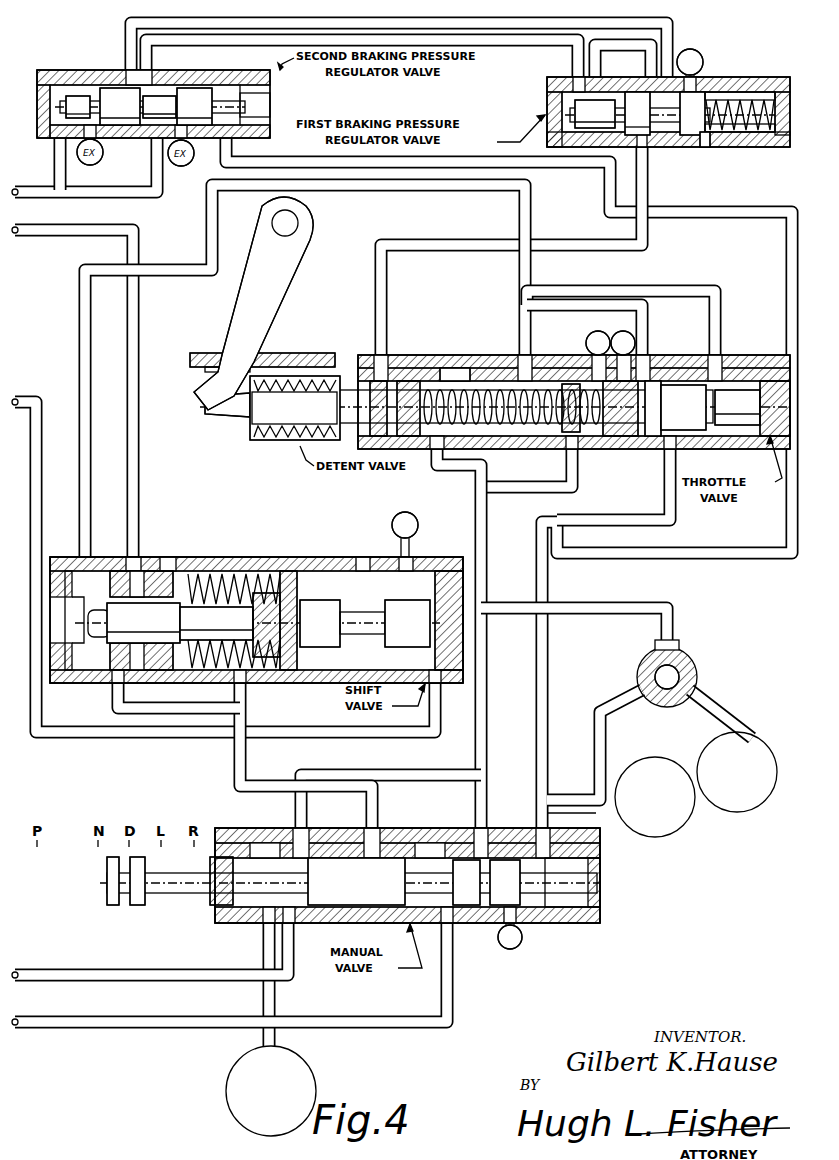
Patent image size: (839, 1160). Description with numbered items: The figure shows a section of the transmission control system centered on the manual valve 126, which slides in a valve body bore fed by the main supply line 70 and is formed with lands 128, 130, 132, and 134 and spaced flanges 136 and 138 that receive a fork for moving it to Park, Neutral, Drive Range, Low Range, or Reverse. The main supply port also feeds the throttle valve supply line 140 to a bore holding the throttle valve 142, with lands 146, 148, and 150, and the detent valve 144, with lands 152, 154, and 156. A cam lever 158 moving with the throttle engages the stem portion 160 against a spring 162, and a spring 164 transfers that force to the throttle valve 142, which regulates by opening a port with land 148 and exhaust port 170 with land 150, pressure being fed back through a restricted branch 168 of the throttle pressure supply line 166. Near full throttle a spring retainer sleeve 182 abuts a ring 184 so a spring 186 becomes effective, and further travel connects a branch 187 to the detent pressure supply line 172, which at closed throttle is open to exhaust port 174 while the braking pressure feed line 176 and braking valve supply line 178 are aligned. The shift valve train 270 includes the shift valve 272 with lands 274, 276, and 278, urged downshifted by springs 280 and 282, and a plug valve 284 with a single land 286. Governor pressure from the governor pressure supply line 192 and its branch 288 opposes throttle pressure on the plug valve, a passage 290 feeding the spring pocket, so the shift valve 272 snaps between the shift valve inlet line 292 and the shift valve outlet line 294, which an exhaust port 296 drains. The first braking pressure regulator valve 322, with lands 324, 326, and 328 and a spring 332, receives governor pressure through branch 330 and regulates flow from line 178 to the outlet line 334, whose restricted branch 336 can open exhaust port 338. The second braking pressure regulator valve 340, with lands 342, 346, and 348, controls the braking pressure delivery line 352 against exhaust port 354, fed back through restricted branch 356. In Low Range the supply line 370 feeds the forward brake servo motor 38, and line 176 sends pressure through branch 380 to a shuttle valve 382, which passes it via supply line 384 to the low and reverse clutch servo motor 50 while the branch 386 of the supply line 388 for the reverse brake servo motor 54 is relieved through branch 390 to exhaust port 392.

The outlet line 334 is at (452, 22).
The restricted branch 336 is at (576, 77).
The small diameter land 342 is at (76, 96).
The land 346 is at (116, 90).
The second braking pressure regulator valve 340 is at (160, 98).
The land 348 is at (196, 92).
The restricted branch 356 is at (52, 188).
The braking pressure delivery line 352 is at (85, 188).
The exhaust port 354 is at (210, 166).
The branch of governor pressure supply line 330 is at (560, 167).
The braking valve supply line 178 is at (648, 166).
The small diameter land 324 is at (598, 100).
The land 326 is at (638, 94).
The exhaust port 338 is at (700, 58).
The first braking pressure regulator valve 322 is at (730, 104).
The land 328 is at (702, 148).
The spring 332 is at (744, 134).
The shift valve outlet line 294 is at (132, 226).
The throttle pressure supply line 166 is at (392, 190).
The branch of throttle pressure supply line 187 is at (522, 306).
The restricted branch 168 is at (716, 320).
The exhaust port 174 is at (600, 332).
The cam lever 158 is at (288, 314).
The spring 162 is at (306, 340).
The detent valve 144 is at (338, 352).
The ring 184 is at (376, 376).
The land 156 is at (446, 380).
The land 154 is at (484, 370).
The land 152 is at (530, 386).
The land 150 is at (574, 384).
The exhaust port 170 is at (652, 380).
The throttle valve 142 is at (760, 356).
The stem portion 160 is at (232, 416).
The spring 186 is at (250, 436).
The spring retainer sleeve 182 is at (292, 436).
The braking pressure feed line 176 is at (486, 486).
The spring 164 is at (618, 436).
The land 148 is at (668, 436).
The land 146 is at (734, 434).
The throttle valve supply line 140 is at (666, 500).
The governor pressure supply line 192 is at (28, 398).
The detent pressure supply line 172 is at (486, 514).
The exhaust port 296 is at (418, 524).
The land 286 is at (142, 604).
The plug valve 284 is at (222, 584).
The spring 280 is at (256, 586).
The large diameter land 278 is at (286, 584).
The land 276 is at (320, 600).
The shift valve 272 is at (462, 592).
The land 274 is at (430, 624).
The shift valve train 270 is at (466, 662).
The passage 290 is at (116, 694).
The spring 282 is at (210, 690).
The branch 288 is at (270, 698).
The shift valve inlet line 292 is at (236, 776).
The branch 380 is at (578, 608).
The branch 386 is at (618, 706).
The shuttle valve 382 is at (658, 698).
The supply line 384 is at (720, 702).
The fluid actuated servo motor 50 is at (760, 756).
The fluid actuated servo motor 54 is at (650, 838).
The supply line 388 is at (596, 788).
The branch 390 is at (579, 817).
The land 132 is at (328, 858).
The flange 136 is at (106, 896).
The flange 138 is at (136, 902).
The land 134 is at (222, 876).
The manual valve 126 is at (242, 922).
The main supply line 70 is at (54, 974).
The supply line 370 is at (44, 1020).
The land 130 is at (466, 924).
The exhaust port 392 is at (512, 948).
The land 128 is at (570, 922).
The fluid actuated servo motor 38 is at (306, 1084).